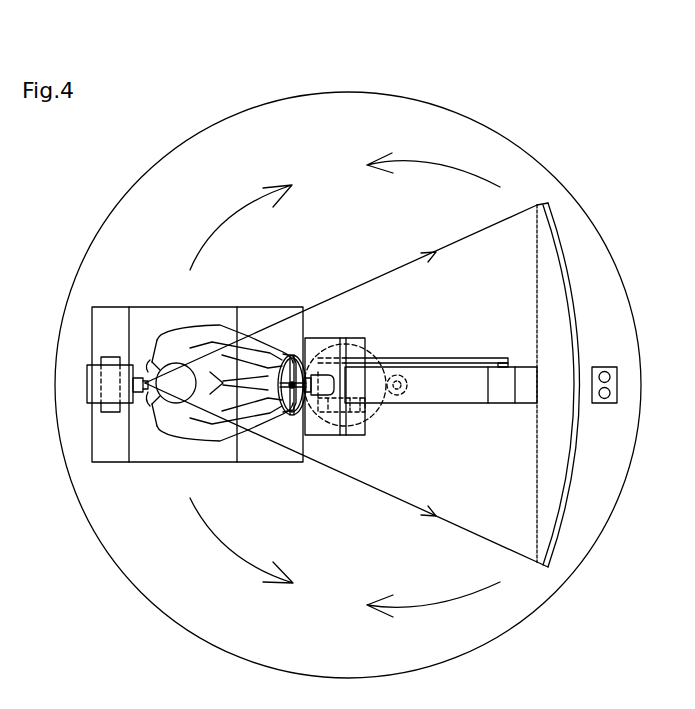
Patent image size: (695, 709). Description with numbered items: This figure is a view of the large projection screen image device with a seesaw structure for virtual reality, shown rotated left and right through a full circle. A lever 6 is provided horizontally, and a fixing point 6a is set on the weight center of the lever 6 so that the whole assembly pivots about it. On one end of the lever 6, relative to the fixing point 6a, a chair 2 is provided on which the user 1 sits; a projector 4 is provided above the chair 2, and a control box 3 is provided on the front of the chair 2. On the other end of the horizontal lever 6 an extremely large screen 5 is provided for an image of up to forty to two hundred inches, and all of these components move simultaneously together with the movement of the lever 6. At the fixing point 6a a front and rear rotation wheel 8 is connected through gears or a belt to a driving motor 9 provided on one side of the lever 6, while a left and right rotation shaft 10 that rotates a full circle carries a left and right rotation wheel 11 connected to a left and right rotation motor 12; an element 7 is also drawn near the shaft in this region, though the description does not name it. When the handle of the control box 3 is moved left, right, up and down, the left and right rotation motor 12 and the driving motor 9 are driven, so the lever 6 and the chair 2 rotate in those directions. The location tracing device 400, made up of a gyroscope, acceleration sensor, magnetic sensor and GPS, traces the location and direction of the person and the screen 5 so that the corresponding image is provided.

The user 1 is at (165, 366).
The chair 2 is at (113, 320).
The control box 3 is at (294, 357).
The projector 4 is at (87, 385).
The location tracing device 400 is at (110, 412).
The extremely large screen 5 is at (583, 306).
The lever 6 is at (478, 393).
The fixing point 6a is at (345, 391).
The support post 7 is at (355, 413).
The front and rear rotation wheel 8 is at (353, 358).
The driving motor 9 is at (510, 368).
The left and right rotation shaft 10 is at (340, 400).
The left and right rotation wheel 11 is at (379, 413).
The left and right rotation motor 12 is at (397, 378).